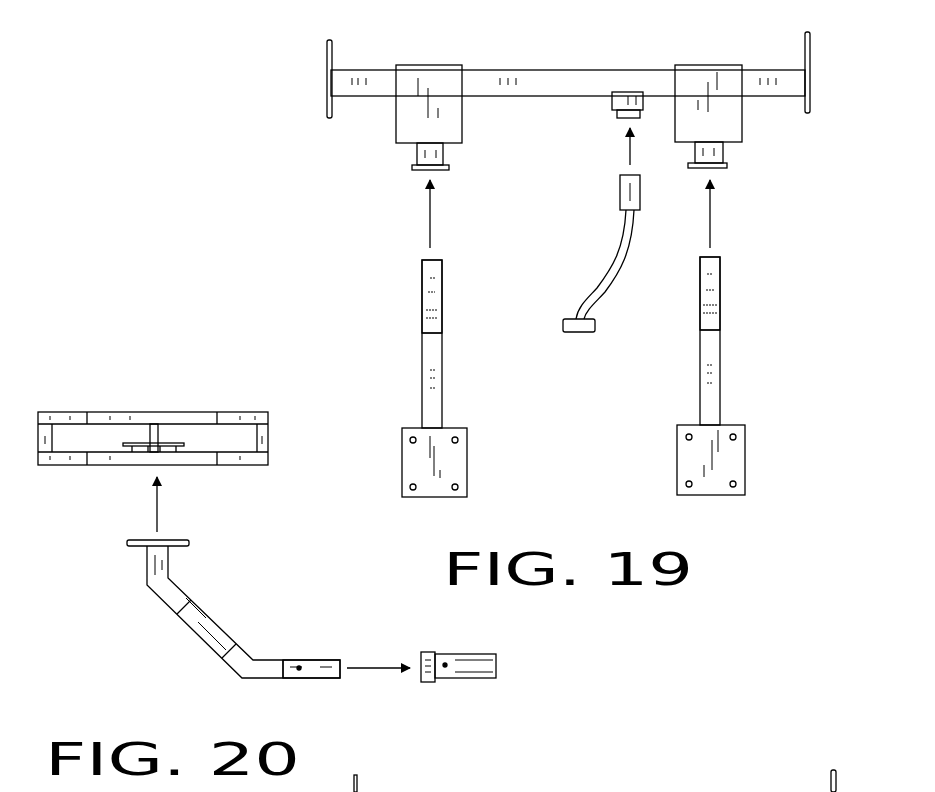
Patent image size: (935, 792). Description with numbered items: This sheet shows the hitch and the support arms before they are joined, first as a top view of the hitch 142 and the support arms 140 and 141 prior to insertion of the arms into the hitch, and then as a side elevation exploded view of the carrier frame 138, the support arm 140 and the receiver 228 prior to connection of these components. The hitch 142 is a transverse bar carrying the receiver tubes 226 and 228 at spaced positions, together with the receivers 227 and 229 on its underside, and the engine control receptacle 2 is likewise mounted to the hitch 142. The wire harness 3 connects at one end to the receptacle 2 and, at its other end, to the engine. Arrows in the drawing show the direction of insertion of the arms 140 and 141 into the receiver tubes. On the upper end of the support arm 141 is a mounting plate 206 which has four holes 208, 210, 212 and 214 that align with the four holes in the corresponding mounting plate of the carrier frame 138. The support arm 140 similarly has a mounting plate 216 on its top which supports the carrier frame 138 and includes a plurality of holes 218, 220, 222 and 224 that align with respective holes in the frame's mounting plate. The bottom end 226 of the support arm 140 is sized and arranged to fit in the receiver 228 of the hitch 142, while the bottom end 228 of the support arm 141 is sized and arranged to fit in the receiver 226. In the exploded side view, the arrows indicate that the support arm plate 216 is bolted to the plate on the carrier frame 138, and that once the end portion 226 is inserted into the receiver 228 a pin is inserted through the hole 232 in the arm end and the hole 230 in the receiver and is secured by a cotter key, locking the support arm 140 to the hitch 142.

In FIG. 19, the engine control receptacle 2 is at (622, 100).
In FIG. 19, the wire harness 3 is at (616, 252).
In FIG. 20, the carrier frame 138 is at (270, 457).
In FIG. 19, the support arm 140 is at (722, 367).
In FIG. 20, the support arm 140 is at (207, 612).
In FIG. 19, the support arm 141 is at (422, 383).
In FIG. 19, the hitch 142 is at (810, 75).
In FIG. 20, the hitch 142 is at (838, 780).
In FIG. 19, the mounting plate 206 is at (402, 460).
In FIG. 19, the hole 208 is at (410, 438).
In FIG. 19, the hole 210 is at (410, 487).
In FIG. 19, the hole 212 is at (458, 440).
In FIG. 19, the hole 214 is at (458, 487).
In FIG. 19, the mounting plate 216 is at (745, 460).
In FIG. 20, the mounting plate 216 is at (170, 542).
In FIG. 19, the hole 218 is at (736, 437).
In FIG. 19, the hole 220 is at (686, 437).
In FIG. 19, the hole 222 is at (686, 484).
In FIG. 19, the hole 224 is at (736, 484).
In FIG. 19, the bottom end of support arm 226 is at (712, 290).
In FIG. 20, the bottom end of support arm 226 is at (313, 665).
In FIG. 19, the receiver 227 is at (717, 155).
In FIG. 20, the receiver 227 is at (742, 791).
In FIG. 19, the receiver 228 is at (430, 293).
In FIG. 20, the receiver 228 is at (464, 653).
In FIG. 19, the receiver 229 is at (412, 158).
In FIG. 20, the receiver 229 is at (458, 791).
In FIG. 20, the hole 230 is at (445, 665).
In FIG. 20, the hole 232 is at (299, 668).